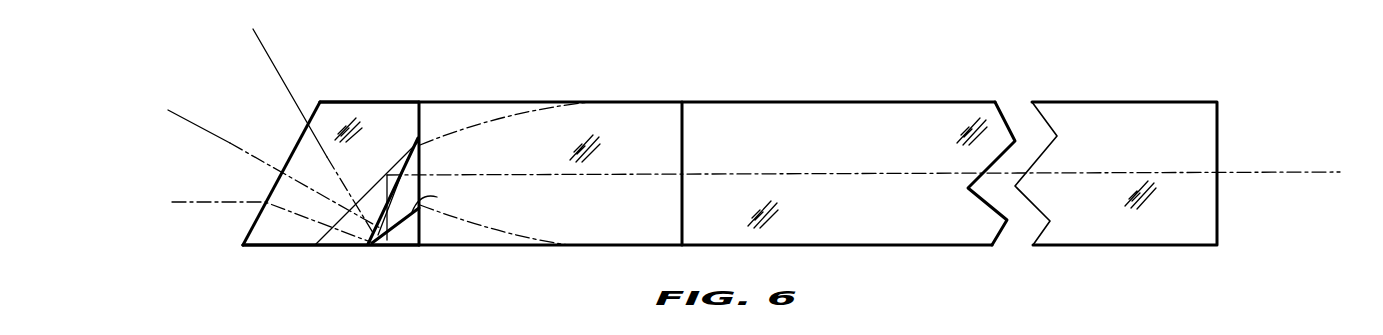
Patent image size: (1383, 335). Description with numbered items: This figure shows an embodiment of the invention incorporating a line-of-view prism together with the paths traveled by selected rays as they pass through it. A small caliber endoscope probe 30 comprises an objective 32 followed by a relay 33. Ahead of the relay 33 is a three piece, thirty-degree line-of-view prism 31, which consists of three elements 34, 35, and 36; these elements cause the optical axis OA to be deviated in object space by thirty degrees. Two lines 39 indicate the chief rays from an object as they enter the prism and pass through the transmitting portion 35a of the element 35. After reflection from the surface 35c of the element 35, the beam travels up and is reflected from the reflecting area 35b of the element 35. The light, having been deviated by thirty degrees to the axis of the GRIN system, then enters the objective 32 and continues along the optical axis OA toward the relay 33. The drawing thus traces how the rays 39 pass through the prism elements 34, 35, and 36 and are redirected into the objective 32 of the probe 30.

The small caliber endoscope probe 30 is at (715, 69).
The line-of-view prism 31 is at (357, 80).
The objective 32 is at (530, 102).
The relay 33 is at (853, 101).
The prism element 34 is at (382, 102).
The prism element 35 is at (341, 247).
The transmitting portion 35a is at (313, 240).
The reflecting area 35b is at (404, 149).
The reflecting surface 35c is at (437, 197).
The prism element 36 is at (403, 249).
The chief rays 39 is at (277, 66).
The optical axis OA is at (882, 175).